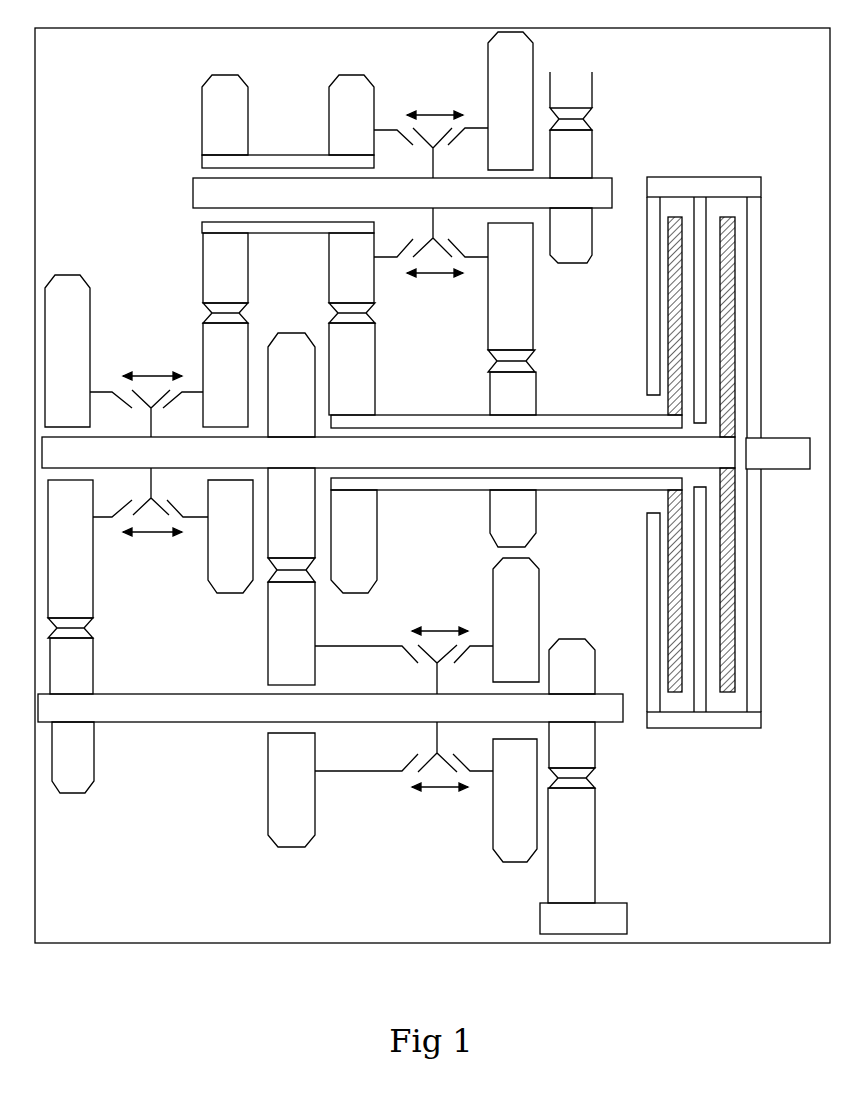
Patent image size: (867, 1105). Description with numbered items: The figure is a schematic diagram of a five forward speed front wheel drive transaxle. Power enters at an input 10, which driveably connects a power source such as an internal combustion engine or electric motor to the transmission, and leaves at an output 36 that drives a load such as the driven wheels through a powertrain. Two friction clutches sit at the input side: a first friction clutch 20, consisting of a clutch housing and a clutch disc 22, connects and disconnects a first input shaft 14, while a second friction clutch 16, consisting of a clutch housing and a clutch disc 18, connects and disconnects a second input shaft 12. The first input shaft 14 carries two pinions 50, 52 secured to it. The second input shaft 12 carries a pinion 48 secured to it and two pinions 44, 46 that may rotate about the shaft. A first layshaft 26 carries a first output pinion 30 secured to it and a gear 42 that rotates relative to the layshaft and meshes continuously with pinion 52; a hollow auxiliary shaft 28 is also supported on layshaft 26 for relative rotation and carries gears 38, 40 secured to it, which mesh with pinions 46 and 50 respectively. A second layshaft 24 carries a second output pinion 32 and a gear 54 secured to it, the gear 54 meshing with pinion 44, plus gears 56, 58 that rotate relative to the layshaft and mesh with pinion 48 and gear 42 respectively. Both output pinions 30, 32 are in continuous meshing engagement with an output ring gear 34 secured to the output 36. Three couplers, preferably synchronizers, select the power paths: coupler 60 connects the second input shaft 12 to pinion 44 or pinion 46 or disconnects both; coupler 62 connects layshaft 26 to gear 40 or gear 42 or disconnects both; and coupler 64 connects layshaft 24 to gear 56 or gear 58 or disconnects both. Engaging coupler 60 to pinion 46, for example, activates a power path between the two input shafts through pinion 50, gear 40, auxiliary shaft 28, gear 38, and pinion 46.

The input 10 is at (778, 453).
The second input shaft 12 is at (388, 452).
The first input shaft 14 is at (598, 418).
The second friction clutch 16 is at (723, 192).
The clutch disc 18 is at (727, 318).
The first friction clutch 20 is at (670, 187).
The clutch disc 22 is at (673, 337).
The second layshaft 24 is at (330, 708).
The first layshaft 26 is at (402, 193).
The auxiliary shaft 28 is at (292, 160).
The first output pinion 30 is at (571, 196).
The second output pinion 32 is at (572, 703).
The output ring gear 34 is at (571, 486).
The output 36 is at (583, 918).
The gear 38 is at (288, 262).
The gear 40 is at (351, 268).
The gear 42 is at (510, 286).
The pinion 44 is at (69, 446).
The pinion 46 is at (228, 448).
The pinion 48 is at (291, 445).
The pinion 50 is at (353, 448).
The pinion 52 is at (512, 448).
The gear 54 is at (71, 705).
The gear 56 is at (291, 702).
The gear 58 is at (516, 710).
The coupler 60 is at (151, 370).
The coupler 62 is at (433, 113).
The coupler 64 is at (440, 628).